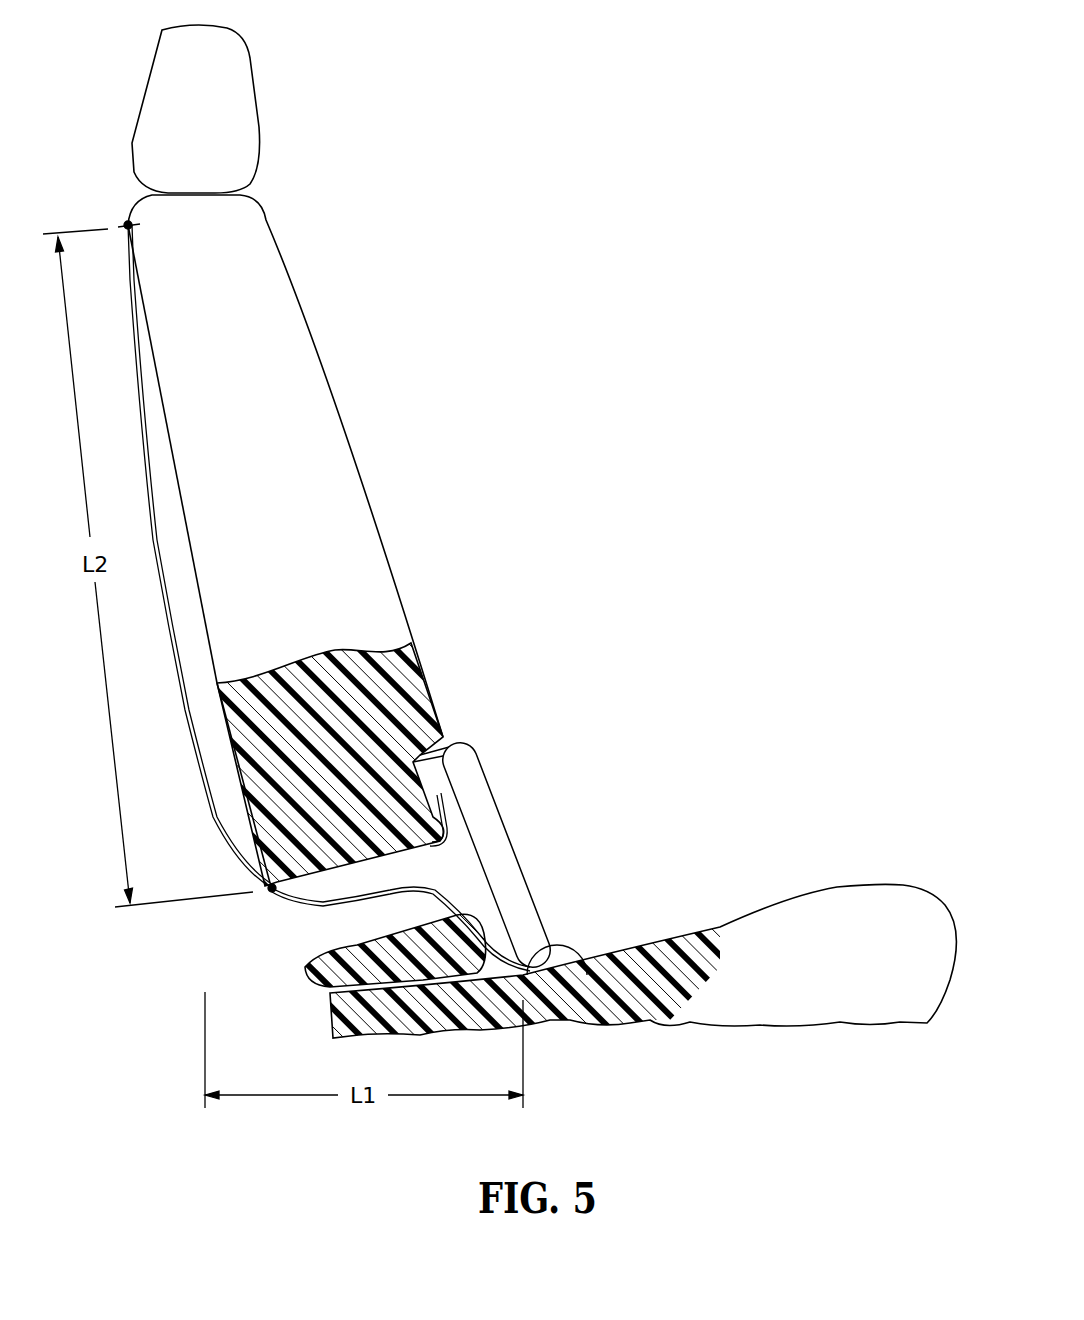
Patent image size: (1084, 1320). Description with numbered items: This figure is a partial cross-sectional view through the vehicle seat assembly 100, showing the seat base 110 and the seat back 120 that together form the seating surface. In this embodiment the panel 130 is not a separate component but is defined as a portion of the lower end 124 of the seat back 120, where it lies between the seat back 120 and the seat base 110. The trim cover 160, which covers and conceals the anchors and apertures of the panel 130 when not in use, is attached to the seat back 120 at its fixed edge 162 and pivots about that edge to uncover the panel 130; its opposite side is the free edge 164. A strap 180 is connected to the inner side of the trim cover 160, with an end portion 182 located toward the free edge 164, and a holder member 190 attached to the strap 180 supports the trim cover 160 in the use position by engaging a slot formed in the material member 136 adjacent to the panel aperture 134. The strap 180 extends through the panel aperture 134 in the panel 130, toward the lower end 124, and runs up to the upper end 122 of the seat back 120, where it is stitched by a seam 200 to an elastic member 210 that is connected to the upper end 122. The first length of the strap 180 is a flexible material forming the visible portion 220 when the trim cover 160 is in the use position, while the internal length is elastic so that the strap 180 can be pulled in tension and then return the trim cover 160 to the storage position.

The vehicle seat assembly 100 is at (680, 554).
The seat base 110 is at (837, 887).
The seat back 120 is at (338, 402).
The upper end 122 is at (243, 227).
The lower end 124 is at (268, 822).
The panel 130 is at (412, 615).
The panel aperture 134 is at (403, 872).
The material member 136 is at (443, 812).
The trim cover 160 is at (540, 913).
The fixed edge 162 is at (467, 743).
The free edge 164 is at (595, 980).
The strap 180 is at (308, 902).
The end portion 182 is at (587, 1020).
The holder member 190 is at (432, 765).
The seam 200 is at (268, 890).
The elastic member 210 is at (215, 818).
The visible portion 220 is at (515, 945).